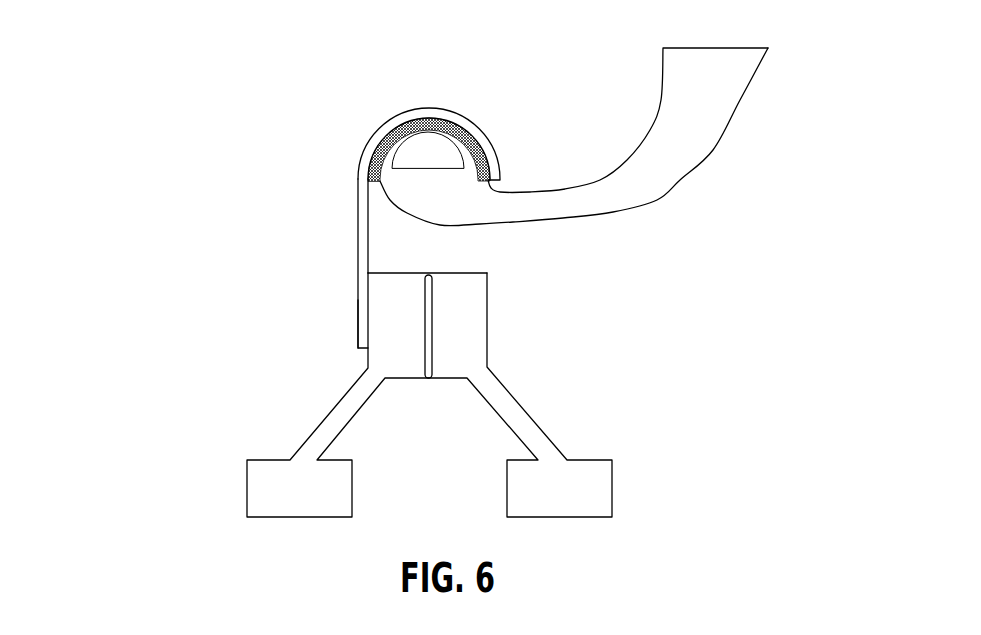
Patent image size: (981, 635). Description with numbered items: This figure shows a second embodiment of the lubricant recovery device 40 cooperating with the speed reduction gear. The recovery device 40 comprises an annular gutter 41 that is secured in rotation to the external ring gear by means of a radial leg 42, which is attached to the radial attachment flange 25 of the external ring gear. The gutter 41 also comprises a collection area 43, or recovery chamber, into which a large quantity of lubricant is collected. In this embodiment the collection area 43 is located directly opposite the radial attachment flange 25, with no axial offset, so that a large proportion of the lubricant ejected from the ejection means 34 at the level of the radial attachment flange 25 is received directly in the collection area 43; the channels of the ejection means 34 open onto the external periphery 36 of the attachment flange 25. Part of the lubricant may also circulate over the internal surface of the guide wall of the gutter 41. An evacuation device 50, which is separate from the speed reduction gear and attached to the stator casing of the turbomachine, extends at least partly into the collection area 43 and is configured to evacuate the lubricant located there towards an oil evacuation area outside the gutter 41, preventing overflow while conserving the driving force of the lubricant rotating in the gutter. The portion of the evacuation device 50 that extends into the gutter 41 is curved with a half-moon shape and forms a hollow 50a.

The radial attachment flange 25 is at (450, 369).
The ejection means 34 is at (440, 356).
The external periphery 36 is at (478, 269).
The recovery device 40 is at (309, 188).
The gutter 41 is at (362, 217).
The radial leg 42 is at (362, 295).
The collection area 43 is at (462, 119).
The evacuation device 50 is at (512, 169).
The hollow 50a is at (425, 150).